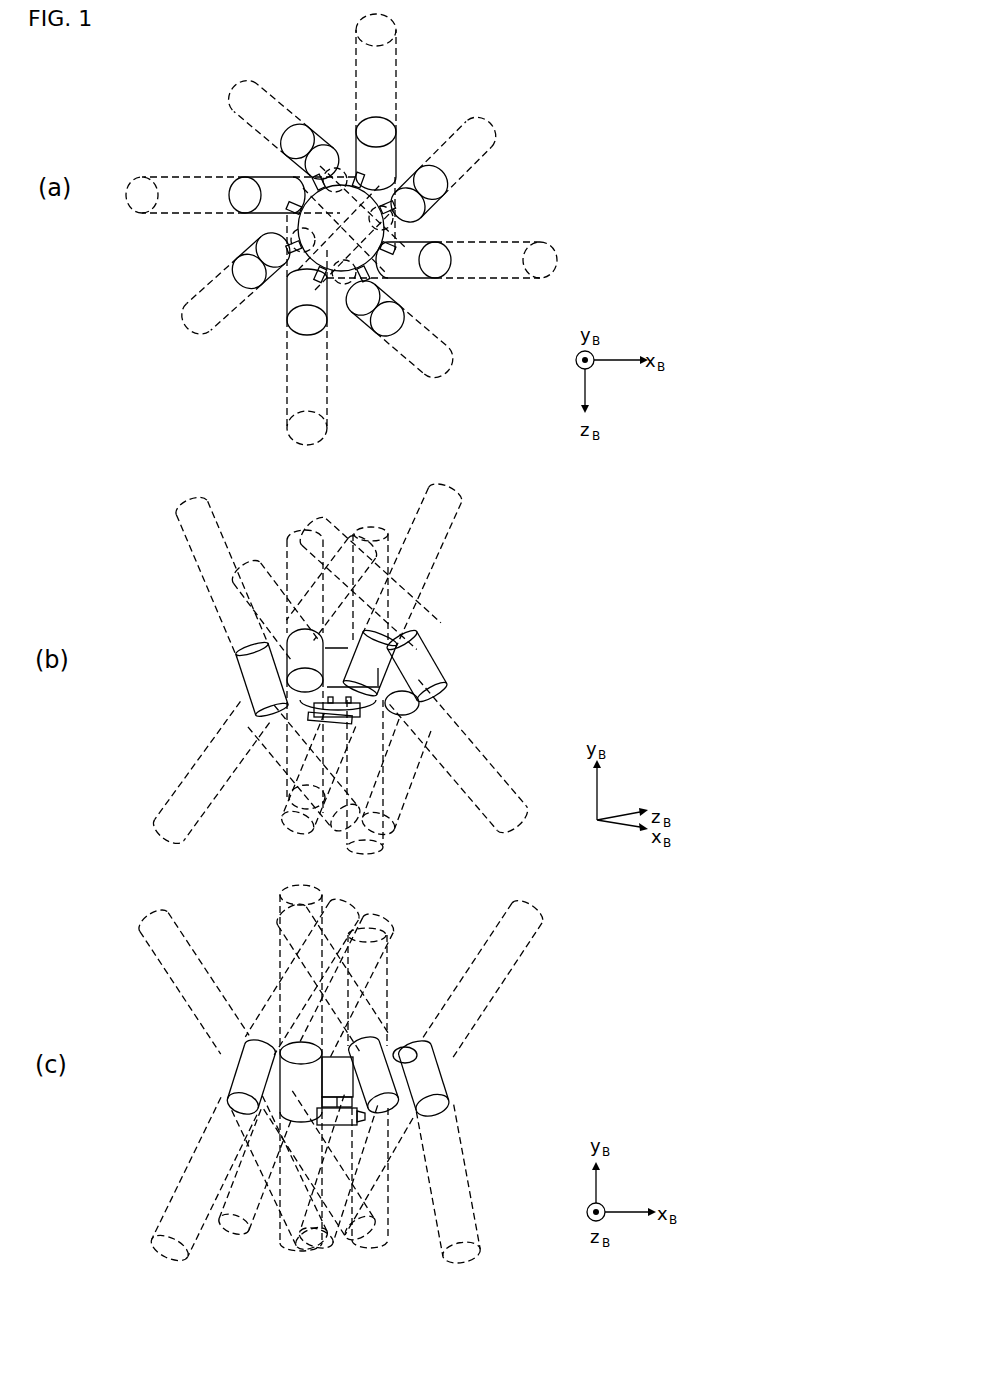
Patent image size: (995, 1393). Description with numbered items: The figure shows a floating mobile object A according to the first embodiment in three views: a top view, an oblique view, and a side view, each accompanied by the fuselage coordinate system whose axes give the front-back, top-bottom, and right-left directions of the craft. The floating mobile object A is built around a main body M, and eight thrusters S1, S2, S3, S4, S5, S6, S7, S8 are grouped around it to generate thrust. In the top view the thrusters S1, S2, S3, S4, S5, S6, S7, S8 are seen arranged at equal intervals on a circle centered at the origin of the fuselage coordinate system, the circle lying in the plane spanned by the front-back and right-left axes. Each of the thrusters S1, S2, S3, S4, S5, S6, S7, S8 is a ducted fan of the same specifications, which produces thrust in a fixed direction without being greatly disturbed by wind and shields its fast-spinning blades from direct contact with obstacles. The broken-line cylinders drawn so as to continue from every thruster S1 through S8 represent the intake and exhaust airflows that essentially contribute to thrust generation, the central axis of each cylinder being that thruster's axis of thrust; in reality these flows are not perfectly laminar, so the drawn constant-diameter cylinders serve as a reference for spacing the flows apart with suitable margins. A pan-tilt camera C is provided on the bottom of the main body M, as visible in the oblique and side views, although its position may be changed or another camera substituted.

The floating mobile object A is at (167, 71).
The main body M is at (351, 235).
The pan-tilt camera C is at (352, 727).
The thruster S1 is at (436, 197).
The thruster S2 is at (384, 158).
The thruster S3 is at (313, 134).
The thruster S4 is at (217, 675).
The thruster S5 is at (195, 1083).
The thruster S6 is at (305, 315).
The thruster S7 is at (372, 317).
The thruster S8 is at (407, 268).